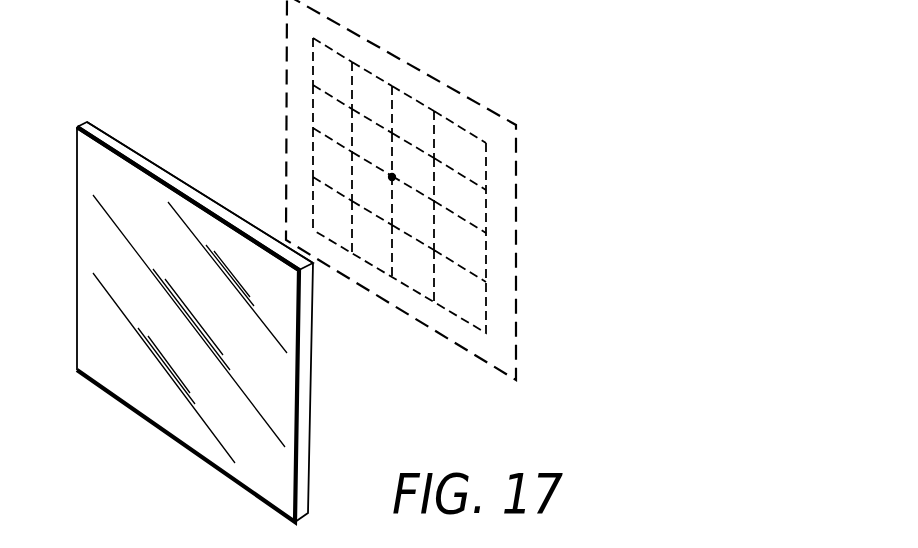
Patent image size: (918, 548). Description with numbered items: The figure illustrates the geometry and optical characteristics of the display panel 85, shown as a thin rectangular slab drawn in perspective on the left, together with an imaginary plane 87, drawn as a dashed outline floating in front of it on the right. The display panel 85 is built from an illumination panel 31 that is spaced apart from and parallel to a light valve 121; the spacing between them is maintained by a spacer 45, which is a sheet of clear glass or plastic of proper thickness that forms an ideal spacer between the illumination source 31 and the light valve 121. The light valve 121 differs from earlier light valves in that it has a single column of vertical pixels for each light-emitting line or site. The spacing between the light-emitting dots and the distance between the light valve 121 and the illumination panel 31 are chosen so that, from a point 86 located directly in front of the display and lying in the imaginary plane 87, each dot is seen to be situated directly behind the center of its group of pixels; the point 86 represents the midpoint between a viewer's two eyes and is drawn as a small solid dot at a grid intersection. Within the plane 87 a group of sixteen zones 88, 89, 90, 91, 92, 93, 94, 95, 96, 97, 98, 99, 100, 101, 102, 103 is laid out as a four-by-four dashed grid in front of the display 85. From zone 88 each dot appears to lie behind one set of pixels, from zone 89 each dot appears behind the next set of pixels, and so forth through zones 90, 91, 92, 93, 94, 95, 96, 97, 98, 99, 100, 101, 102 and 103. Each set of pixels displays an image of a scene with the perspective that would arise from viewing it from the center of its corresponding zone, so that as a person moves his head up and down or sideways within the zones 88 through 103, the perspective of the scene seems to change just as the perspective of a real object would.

The illumination panel 31 is at (93, 229).
The display panel 85 is at (78, 127).
The light valve 121 is at (167, 168).
The spacer 45 is at (203, 198).
The imaginary plane 87 is at (517, 260).
The point 86 is at (391, 180).
The zone 88 is at (332, 61).
The zone 89 is at (372, 85).
The zone 90 is at (413, 109).
The zone 91 is at (460, 136).
The zone 92 is at (332, 106).
The zone 93 is at (372, 130).
The zone 94 is at (413, 155).
The zone 95 is at (460, 182).
The zone 96 is at (332, 152).
The zone 97 is at (372, 176).
The zone 98 is at (413, 200).
The zone 99 is at (460, 226).
The zone 100 is at (332, 203).
The zone 101 is at (372, 227).
The zone 102 is at (413, 251).
The zone 103 is at (460, 276).